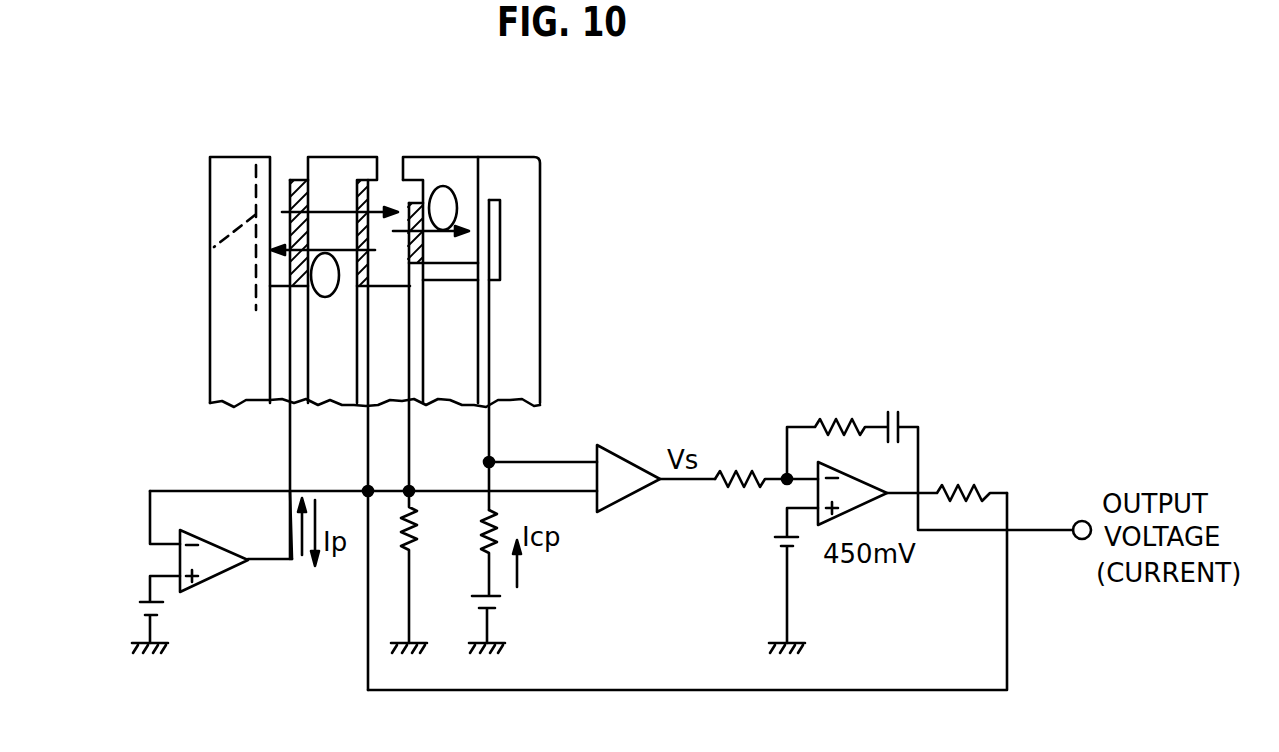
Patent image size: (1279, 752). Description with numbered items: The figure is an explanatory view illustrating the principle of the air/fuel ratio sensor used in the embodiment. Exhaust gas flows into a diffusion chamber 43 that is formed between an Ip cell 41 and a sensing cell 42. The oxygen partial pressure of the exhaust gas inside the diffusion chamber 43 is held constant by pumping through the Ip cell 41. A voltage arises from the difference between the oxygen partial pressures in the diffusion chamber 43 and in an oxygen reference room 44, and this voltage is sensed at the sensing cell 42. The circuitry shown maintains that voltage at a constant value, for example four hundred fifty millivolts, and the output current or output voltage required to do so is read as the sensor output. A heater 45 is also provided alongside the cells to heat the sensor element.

The Ip cell 41 is at (340, 160).
The Vs/Icp cell 42 is at (440, 168).
The diffusion chamber 43 is at (388, 170).
The oxygen reference room 44 is at (500, 232).
The heater 45 is at (210, 248).